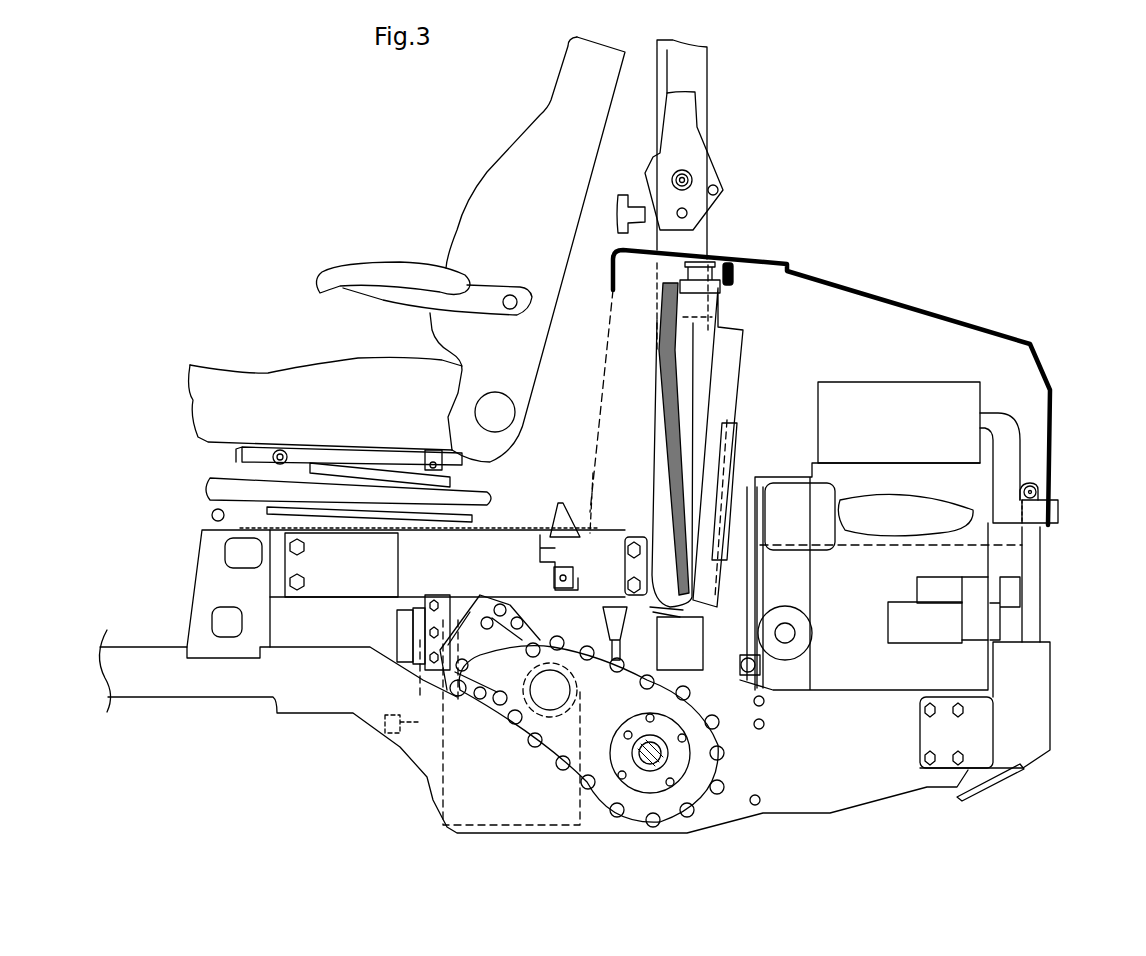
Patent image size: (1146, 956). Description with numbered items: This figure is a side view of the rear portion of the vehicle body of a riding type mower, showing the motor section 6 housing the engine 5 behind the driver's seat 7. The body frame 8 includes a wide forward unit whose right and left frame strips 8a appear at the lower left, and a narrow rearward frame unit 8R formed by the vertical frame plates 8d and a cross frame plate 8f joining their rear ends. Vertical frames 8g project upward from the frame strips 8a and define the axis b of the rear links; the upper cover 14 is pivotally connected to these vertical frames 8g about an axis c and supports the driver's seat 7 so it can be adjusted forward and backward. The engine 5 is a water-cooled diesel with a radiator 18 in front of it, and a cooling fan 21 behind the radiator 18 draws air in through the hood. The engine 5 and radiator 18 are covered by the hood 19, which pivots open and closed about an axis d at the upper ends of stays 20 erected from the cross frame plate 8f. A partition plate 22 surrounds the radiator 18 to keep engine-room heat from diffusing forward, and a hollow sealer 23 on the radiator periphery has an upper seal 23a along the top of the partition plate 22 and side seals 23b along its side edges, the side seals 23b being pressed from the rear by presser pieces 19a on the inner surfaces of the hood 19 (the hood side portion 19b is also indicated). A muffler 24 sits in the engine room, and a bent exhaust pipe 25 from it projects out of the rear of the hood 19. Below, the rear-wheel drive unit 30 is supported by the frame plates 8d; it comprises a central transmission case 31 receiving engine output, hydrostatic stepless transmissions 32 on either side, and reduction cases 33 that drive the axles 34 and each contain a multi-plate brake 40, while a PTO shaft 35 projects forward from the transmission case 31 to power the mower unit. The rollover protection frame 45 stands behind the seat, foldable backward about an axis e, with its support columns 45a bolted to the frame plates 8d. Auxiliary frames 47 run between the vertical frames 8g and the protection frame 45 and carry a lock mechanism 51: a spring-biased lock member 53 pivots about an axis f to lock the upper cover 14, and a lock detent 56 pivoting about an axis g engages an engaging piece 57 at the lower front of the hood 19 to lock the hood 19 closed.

The engine 5 is at (866, 660).
The motor section 6 is at (915, 277).
The driver's seat 7 is at (487, 180).
The body frame 8 is at (231, 747).
The frame strips 8a is at (163, 690).
The vertical frame plates 8d is at (875, 800).
The cross frame plate 8f is at (1050, 709).
The vertical frames 8g is at (198, 554).
The rearward frame unit 8R is at (392, 760).
The upper cover 14 is at (415, 530).
The radiator 18 is at (656, 500).
The hood 19 is at (935, 304).
The presser pieces 19a is at (700, 380).
The canopy frame side portion 19b is at (599, 296).
The stays 20 is at (1045, 602).
The cooling fan 21 is at (740, 462).
The partition plate 22 is at (722, 292).
The sealer 23 is at (708, 411).
The upper seal 23a is at (736, 272).
The side seals 23b is at (660, 365).
The muffler 24 is at (897, 385).
The exhaust pipe 25 is at (1060, 515).
The rear-wheel drive unit 30 is at (742, 758).
The central transmission case 31 is at (425, 789).
The hydrostatic stepless transmissions 32 is at (490, 700).
The reduction cases 33 is at (765, 712).
The axles 34 is at (640, 745).
The PTO shaft 35 is at (385, 720).
The brake 40 is at (548, 755).
The rollover protection frame 45 is at (721, 82).
The support columns 45a is at (700, 230).
The auxiliary frames 47 is at (319, 615).
The lock mechanism 51 is at (573, 488).
The lock member 53 is at (555, 514).
The lock detent 56 is at (598, 555).
The engaging piece 57 is at (625, 590).
The axis b is at (228, 624).
The axis c is at (213, 512).
The axis d is at (1037, 488).
The axis e is at (686, 172).
The axis f is at (545, 549).
The axis g is at (555, 574).